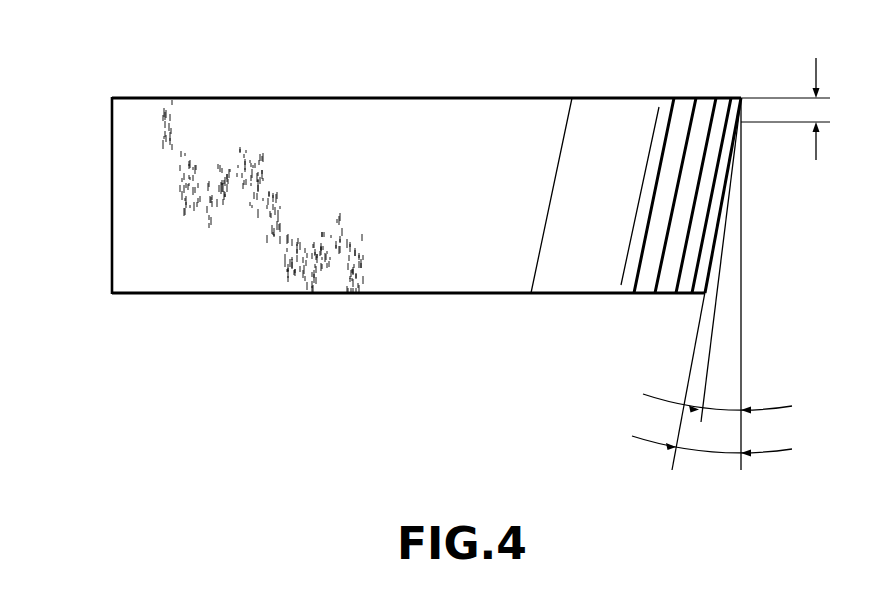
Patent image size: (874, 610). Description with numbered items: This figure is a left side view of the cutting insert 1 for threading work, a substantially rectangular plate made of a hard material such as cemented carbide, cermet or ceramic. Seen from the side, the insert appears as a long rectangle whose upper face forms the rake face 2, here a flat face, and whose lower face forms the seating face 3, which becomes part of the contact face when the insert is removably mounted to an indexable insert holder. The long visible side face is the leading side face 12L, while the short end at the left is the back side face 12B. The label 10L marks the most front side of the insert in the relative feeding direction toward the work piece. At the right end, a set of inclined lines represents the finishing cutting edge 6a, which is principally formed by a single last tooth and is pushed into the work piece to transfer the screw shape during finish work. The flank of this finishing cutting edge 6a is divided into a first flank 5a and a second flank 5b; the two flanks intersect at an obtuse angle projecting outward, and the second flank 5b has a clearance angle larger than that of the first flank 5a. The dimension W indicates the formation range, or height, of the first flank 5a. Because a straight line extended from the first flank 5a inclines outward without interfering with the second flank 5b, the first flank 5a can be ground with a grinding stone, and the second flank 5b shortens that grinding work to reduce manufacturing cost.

The cutting insert 1 is at (405, 244).
The rake face 2 is at (357, 88).
The seating face 3 is at (403, 295).
The first flank 5a is at (744, 102).
The second flank 5b is at (722, 205).
The finishing cutting edge 6a is at (741, 98).
The most front side in the relative feeding direction 10L is at (465, 97).
The leading side face 12L is at (342, 179).
The back side face 12B is at (100, 197).
The formation range of the first flank W is at (796, 109).